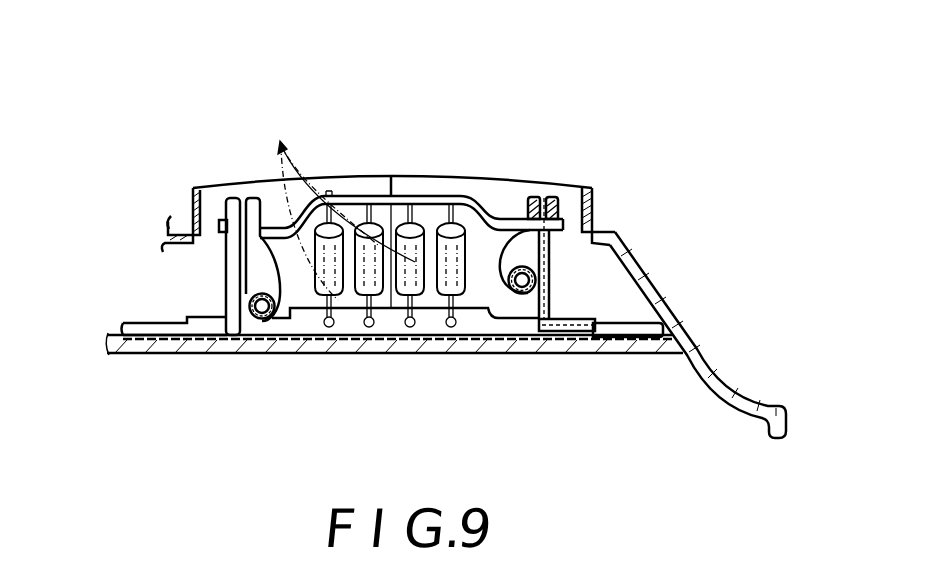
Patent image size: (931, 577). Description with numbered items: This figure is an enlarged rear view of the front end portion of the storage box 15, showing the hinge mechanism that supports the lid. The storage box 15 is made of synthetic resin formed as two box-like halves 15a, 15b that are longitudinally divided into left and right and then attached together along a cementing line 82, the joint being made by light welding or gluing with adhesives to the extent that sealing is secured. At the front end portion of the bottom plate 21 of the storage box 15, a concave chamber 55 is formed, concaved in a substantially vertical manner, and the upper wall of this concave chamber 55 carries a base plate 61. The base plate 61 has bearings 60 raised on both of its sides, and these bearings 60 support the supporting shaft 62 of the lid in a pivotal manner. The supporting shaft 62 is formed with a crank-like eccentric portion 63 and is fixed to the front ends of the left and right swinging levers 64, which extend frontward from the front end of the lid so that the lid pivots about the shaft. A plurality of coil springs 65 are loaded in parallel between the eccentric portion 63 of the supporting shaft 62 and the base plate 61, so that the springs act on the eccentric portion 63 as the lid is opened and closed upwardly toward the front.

The storage box 15 is at (382, 178).
The box-like half 15a is at (323, 178).
The box-like half 15b is at (430, 200).
The bottom plate 21 is at (312, 341).
The concave chamber 55 is at (401, 429).
The bearing 60 is at (232, 268).
The base plate 61 is at (540, 332).
The supporting shaft 62 is at (505, 218).
The eccentric portion 63 is at (390, 194).
The swinging lever 64 is at (258, 319).
The coil spring 65 is at (339, 205).
The cementing line 82 is at (391, 353).